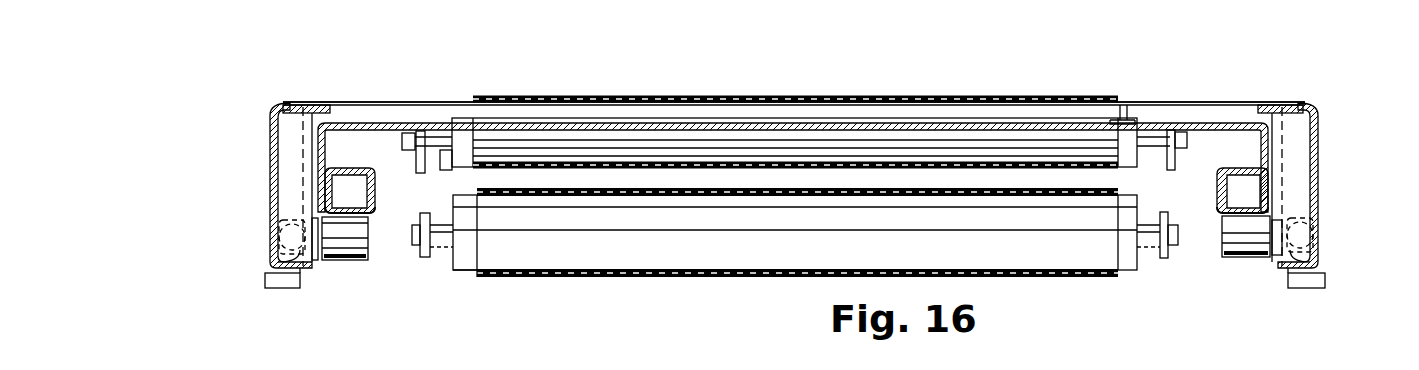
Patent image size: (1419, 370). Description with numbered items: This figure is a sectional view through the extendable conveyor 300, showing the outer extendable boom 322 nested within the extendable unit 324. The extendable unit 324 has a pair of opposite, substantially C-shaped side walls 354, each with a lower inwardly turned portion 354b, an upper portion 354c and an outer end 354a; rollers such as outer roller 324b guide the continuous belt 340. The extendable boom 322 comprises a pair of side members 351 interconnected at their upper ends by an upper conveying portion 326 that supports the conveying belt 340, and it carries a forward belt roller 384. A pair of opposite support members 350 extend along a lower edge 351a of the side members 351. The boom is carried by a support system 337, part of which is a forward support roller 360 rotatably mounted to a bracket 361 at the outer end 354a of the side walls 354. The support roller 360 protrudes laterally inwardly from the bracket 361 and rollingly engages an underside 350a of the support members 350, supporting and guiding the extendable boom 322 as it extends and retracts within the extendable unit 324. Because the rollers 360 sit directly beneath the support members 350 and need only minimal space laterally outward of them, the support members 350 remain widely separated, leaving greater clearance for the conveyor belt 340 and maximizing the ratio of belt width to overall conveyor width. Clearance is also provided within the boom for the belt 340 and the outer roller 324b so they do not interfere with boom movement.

The extendable conveyor 300 is at (187, 67).
The extendable boom 322 is at (390, 126).
The extendable unit 324 is at (268, 158).
The roller 324b is at (462, 280).
The upper conveying portion 326 is at (360, 126).
The support system 337 is at (348, 262).
The continuous belt 340 is at (710, 94).
The support member 350 is at (355, 220).
The underside 350a is at (353, 240).
The side member 351 is at (317, 155).
The lower edge 351a is at (330, 190).
The side wall 354 is at (277, 114).
The outer end 354a is at (277, 248).
The lower inwardly turned portion 354b is at (275, 290).
The upper portion 354c is at (303, 110).
The forward support roller 360 is at (337, 262).
The bracket 361 is at (318, 262).
The forward belt roller 384 is at (1125, 106).